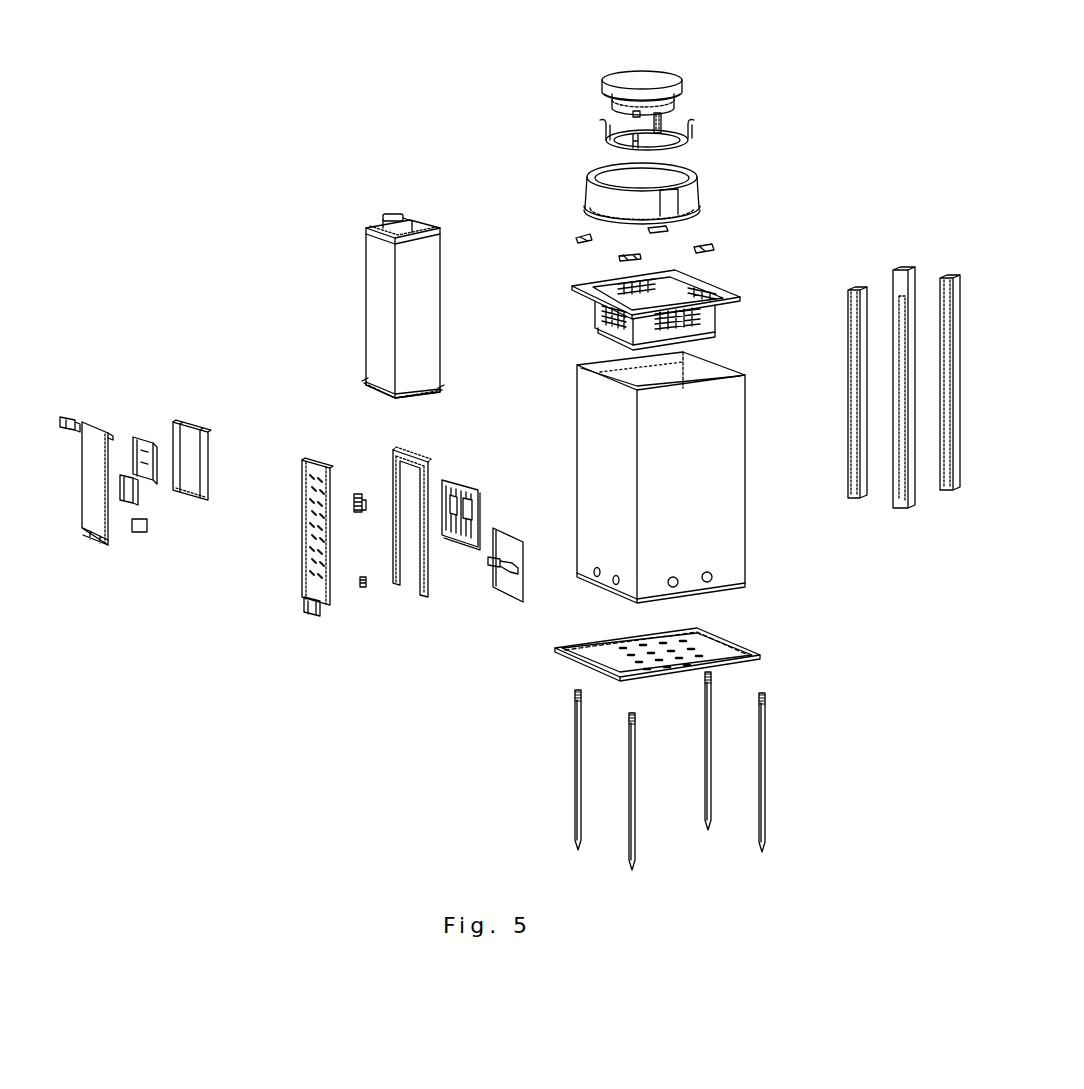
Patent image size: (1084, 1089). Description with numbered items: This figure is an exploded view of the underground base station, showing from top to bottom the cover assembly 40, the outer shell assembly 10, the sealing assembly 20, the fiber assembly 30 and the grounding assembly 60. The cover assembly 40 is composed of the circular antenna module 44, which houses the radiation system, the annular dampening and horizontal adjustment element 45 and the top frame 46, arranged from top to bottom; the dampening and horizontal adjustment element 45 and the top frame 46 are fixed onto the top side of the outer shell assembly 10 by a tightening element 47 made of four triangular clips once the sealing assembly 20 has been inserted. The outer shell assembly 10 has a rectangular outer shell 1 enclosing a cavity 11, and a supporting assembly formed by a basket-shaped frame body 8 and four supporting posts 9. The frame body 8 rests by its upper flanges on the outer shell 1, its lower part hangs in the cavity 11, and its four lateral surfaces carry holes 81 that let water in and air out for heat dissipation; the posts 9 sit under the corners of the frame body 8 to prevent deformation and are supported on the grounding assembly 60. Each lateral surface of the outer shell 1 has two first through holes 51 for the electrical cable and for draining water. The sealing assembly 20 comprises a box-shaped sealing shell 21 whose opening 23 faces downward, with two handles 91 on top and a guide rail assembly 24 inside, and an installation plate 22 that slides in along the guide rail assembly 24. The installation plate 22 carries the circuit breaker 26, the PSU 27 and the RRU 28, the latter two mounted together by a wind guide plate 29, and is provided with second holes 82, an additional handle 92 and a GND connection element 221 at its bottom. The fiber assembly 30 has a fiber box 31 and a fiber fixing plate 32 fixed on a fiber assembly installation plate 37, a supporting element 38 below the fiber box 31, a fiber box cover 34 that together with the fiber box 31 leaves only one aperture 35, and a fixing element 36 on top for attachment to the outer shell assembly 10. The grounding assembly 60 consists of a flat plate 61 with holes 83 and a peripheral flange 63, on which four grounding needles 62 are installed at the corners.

The outer shell 1 is at (727, 470).
The frame body 8 is at (588, 287).
The supporting post 9 is at (857, 380).
The outer shell assembly 10 is at (805, 266).
The cavity 11 is at (650, 375).
The sealing assembly 20 is at (280, 258).
The sealing shell 21 is at (378, 268).
The installation plate 22 is at (302, 515).
The opening 23 is at (395, 398).
The guide rail assembly 24 is at (428, 468).
The circuit breaker 26 is at (357, 492).
The PSU 27 is at (455, 485).
The RRU 28 is at (478, 510).
The wind guide plate 29 is at (507, 580).
The fiber assembly 30 is at (98, 342).
The fiber box 31 is at (133, 440).
The fiber fixing plate 32 is at (145, 535).
The fiber box cover 34 is at (188, 425).
The aperture 35 is at (193, 490).
The fixing element 36 is at (66, 418).
The fiber assembly installation plate 37 is at (100, 518).
The supporting element 38 is at (130, 503).
The cover assembly 40 is at (800, 157).
The antenna module 44 is at (602, 93).
The dampening and horizontal adjustment element 45 is at (693, 130).
The top frame 46 is at (598, 206).
The tightening element 47 is at (712, 250).
The first through hole 51 is at (710, 577).
The grounding assembly 60 is at (823, 663).
The flat plate 61 is at (590, 657).
The grounding needle 62 is at (765, 730).
The flange 63 is at (740, 643).
The hole 81 is at (690, 318).
The second hole 82 is at (310, 555).
The hole 83 is at (640, 655).
The handle 91 is at (388, 215).
The additional handle 92 is at (312, 610).
The GND connection element 221 is at (363, 587).